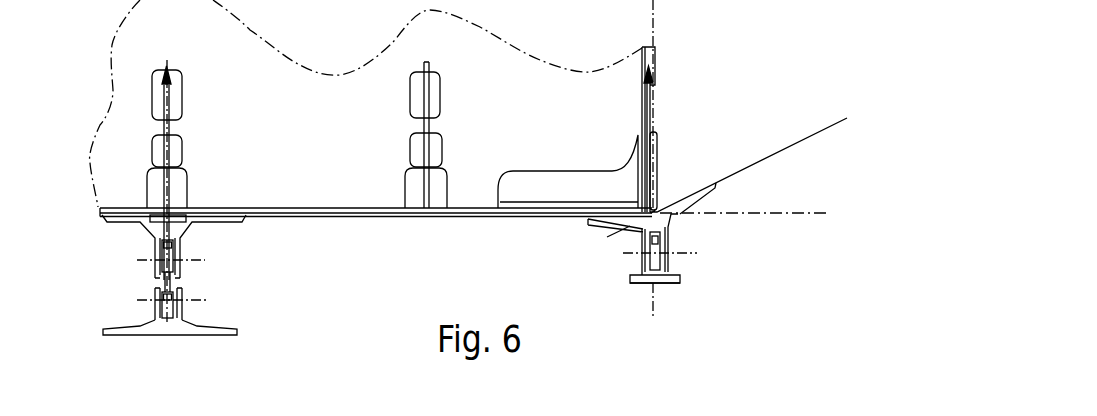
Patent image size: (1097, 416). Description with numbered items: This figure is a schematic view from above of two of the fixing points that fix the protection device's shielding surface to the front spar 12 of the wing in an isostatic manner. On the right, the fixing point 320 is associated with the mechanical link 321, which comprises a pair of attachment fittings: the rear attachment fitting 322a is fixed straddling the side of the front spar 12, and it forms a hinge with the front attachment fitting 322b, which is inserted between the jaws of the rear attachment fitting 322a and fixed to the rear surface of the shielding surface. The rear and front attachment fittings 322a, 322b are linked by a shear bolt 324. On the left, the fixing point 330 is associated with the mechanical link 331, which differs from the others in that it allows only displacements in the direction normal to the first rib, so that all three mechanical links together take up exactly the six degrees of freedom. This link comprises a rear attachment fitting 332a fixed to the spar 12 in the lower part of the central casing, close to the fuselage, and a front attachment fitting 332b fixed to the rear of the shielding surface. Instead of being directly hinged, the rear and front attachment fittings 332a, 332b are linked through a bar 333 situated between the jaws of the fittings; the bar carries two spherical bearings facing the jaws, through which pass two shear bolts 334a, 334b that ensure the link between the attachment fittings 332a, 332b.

The front spar 12 is at (127, 185).
The fixing point 320 is at (630, 277).
The mechanical link 321 is at (665, 300).
The rear attachment fitting 322a is at (672, 232).
The front attachment fitting 322b is at (641, 284).
The shear bolt 324 is at (642, 249).
The fixing point 330 is at (171, 298).
The mechanical link 331 is at (137, 294).
The rear attachment fitting 332a is at (184, 230).
The front attachment fitting 332b is at (158, 331).
The bar 333 is at (172, 280).
The shear bolt 334a is at (162, 259).
The shear bolt 334b is at (180, 300).